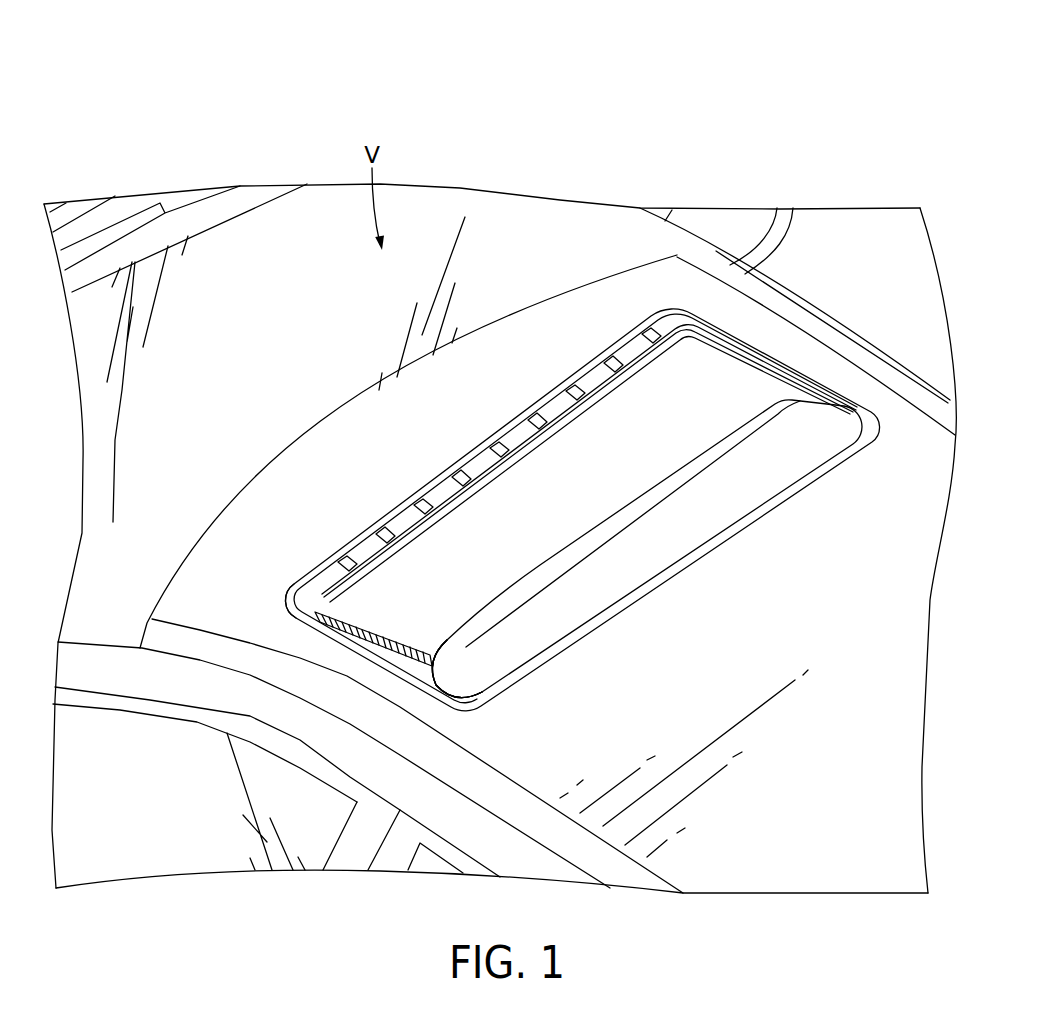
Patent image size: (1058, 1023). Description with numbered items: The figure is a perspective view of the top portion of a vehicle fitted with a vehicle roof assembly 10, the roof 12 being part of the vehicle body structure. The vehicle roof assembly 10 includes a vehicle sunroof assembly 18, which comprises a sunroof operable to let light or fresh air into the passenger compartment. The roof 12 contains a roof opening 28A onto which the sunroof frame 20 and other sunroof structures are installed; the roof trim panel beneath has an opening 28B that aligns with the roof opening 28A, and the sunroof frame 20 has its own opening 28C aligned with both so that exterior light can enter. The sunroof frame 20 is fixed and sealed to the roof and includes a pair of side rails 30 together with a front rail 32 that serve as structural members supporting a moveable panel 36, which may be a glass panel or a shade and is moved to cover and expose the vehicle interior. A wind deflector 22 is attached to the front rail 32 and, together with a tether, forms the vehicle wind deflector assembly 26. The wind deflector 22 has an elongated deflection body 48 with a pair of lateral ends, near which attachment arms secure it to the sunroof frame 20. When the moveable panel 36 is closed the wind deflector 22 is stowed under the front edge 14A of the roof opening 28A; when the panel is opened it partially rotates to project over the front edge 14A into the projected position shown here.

The vehicle roof assembly 10 is at (718, 96).
The roof 12 is at (788, 322).
The front edge 14A is at (548, 383).
The vehicle sunroof assembly 18 is at (338, 503).
The sunroof frame 20 is at (337, 582).
The wind deflector 22 is at (507, 433).
The vehicle wind deflector assembly 26 is at (266, 601).
The roof opening 28A is at (468, 596).
The opening 28B is at (457, 669).
The opening 28C is at (457, 669).
The side rails 30 is at (746, 368).
The front rail 32 is at (467, 497).
The moveable panel 36 is at (663, 487).
The elongated deflection body 48 is at (423, 487).